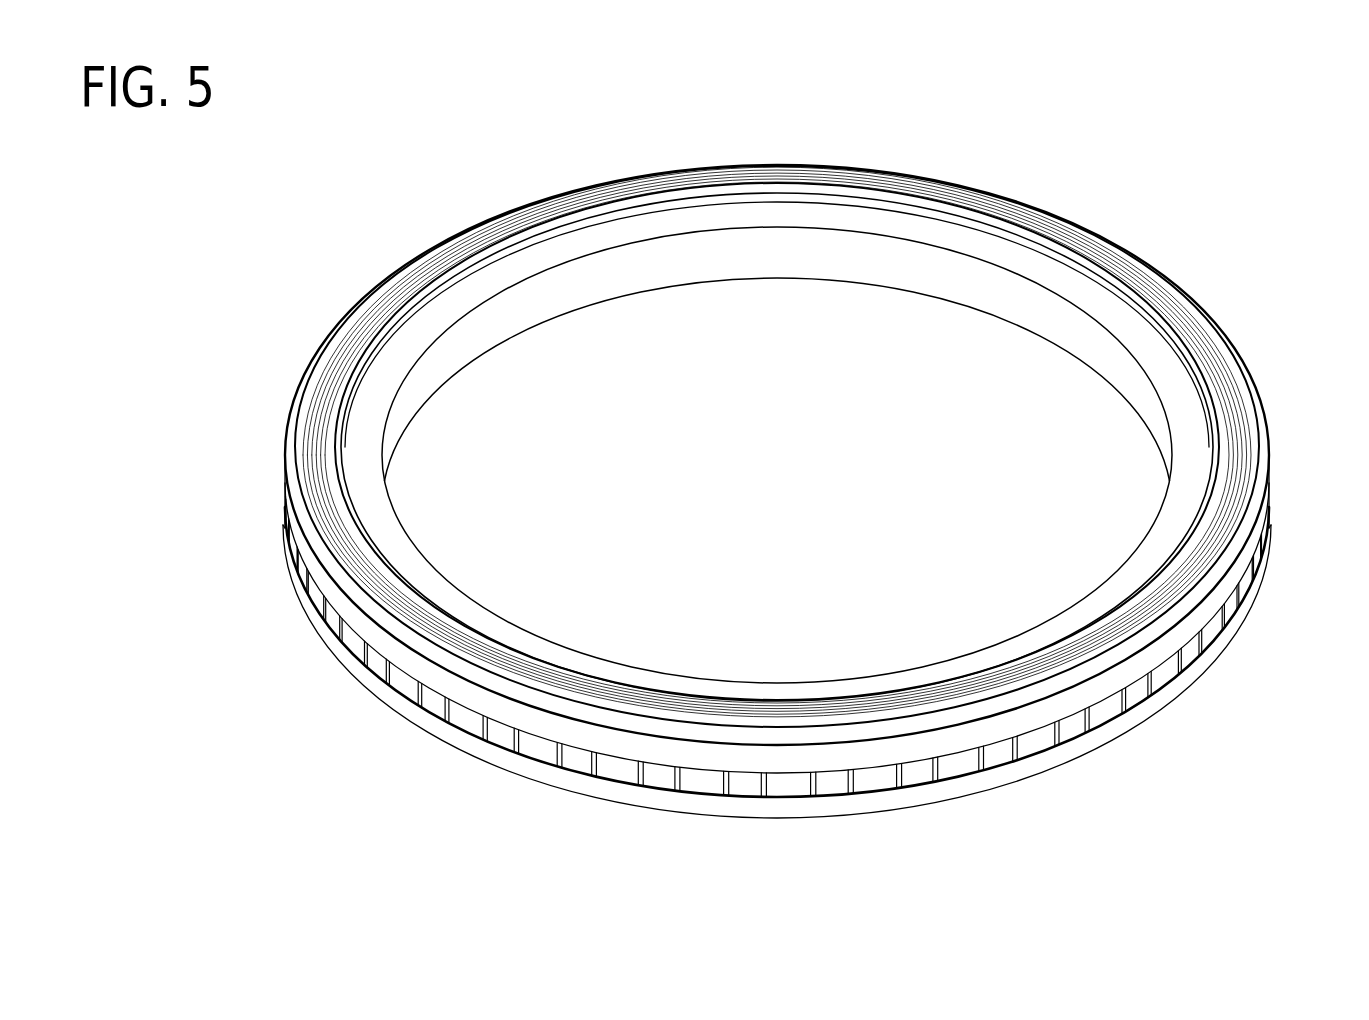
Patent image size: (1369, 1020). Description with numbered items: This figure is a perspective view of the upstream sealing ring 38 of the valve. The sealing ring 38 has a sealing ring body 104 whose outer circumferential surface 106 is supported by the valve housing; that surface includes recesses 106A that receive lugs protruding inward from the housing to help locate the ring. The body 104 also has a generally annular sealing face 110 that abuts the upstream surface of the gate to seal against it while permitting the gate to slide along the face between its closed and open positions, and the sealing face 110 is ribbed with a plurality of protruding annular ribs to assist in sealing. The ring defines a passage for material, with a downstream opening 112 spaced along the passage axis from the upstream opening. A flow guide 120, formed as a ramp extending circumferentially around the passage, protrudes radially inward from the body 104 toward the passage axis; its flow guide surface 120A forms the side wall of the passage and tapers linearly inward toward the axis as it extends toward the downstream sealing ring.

The upstream sealing ring 38 is at (1265, 183).
The sealing ring body 104 is at (773, 818).
The outer circumferential surface 106 is at (622, 790).
The recesses 106A is at (538, 748).
The sealing face 110 is at (432, 260).
The downstream opening 112 is at (1218, 415).
The flow guide 120 is at (515, 283).
The flow guide surface 120A is at (672, 258).